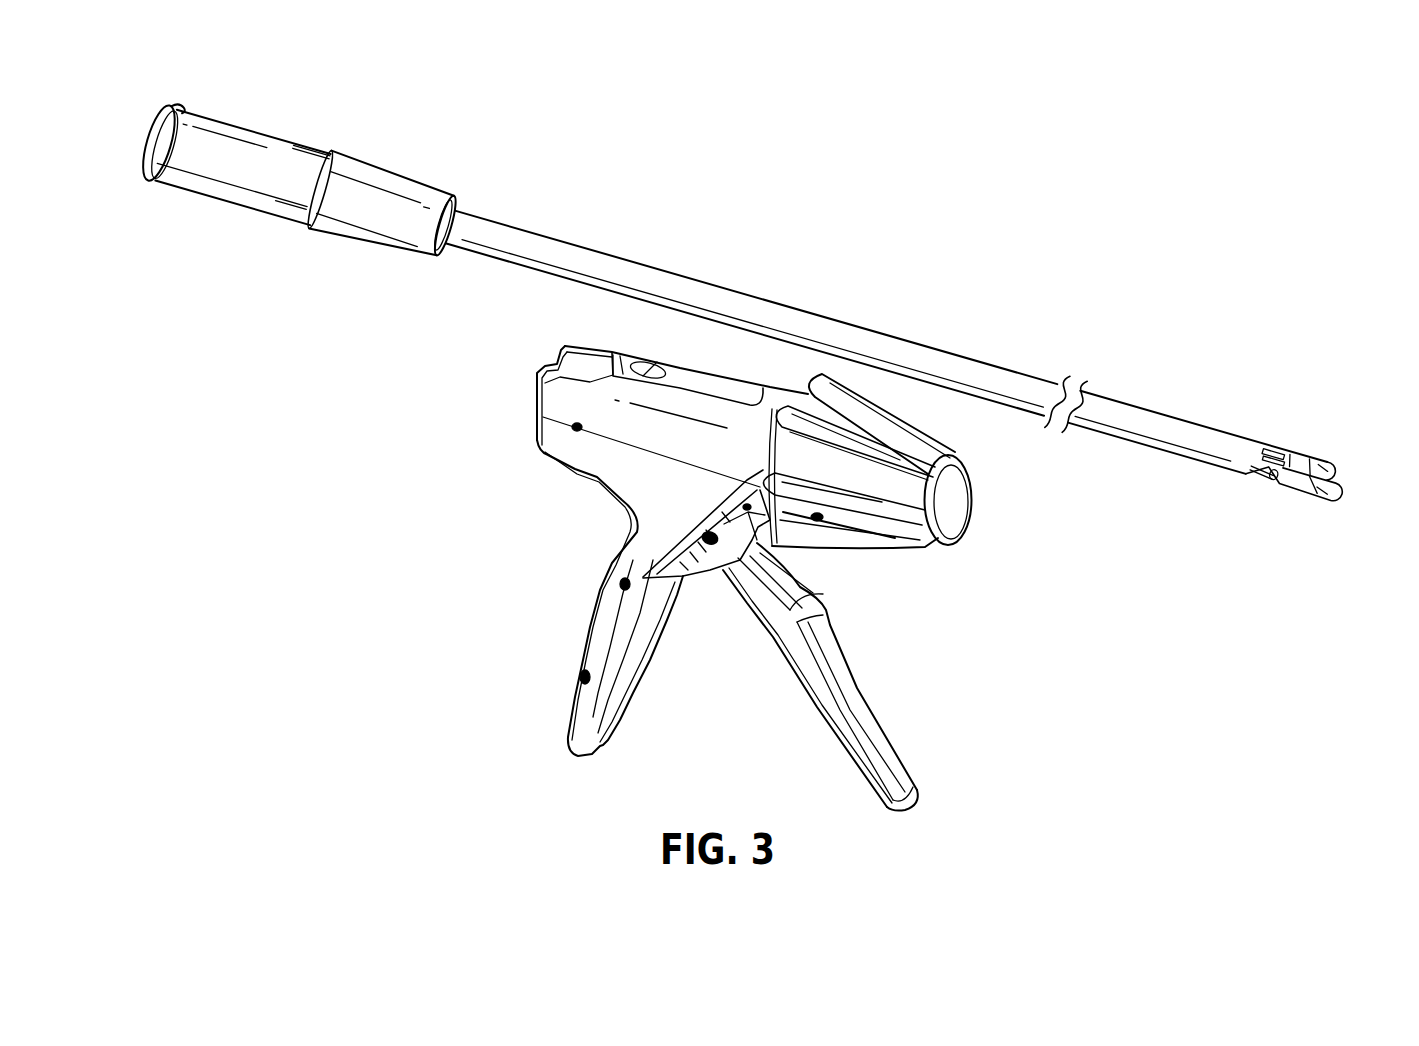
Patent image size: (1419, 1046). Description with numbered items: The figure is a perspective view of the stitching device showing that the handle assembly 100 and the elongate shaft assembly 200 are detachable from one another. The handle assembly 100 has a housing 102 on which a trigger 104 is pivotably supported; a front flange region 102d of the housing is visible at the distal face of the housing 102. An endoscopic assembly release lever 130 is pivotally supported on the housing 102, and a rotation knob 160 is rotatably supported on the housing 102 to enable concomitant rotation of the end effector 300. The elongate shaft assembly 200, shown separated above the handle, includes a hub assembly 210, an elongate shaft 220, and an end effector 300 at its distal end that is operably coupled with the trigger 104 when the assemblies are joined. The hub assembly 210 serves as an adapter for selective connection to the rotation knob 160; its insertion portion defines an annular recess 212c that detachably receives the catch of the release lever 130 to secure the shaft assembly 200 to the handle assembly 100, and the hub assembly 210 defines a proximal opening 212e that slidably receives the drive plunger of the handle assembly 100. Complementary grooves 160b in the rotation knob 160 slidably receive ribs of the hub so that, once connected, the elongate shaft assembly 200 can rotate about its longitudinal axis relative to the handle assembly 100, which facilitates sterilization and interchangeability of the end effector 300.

The handle assembly 100 is at (435, 401).
The housing 102 is at (640, 551).
The housing front flange 102d is at (537, 403).
The trigger 104 is at (872, 727).
The endoscopic assembly release lever 130 is at (680, 360).
The rotation knob 160 is at (890, 480).
The grooves 160b is at (957, 530).
The elongate shaft assembly 200 is at (753, 281).
The hub assembly 210 is at (357, 137).
The annular recess 212c is at (167, 106).
The proximal opening 212e is at (147, 132).
The elongate shaft 220 is at (879, 316).
The end effector 300 is at (1339, 423).